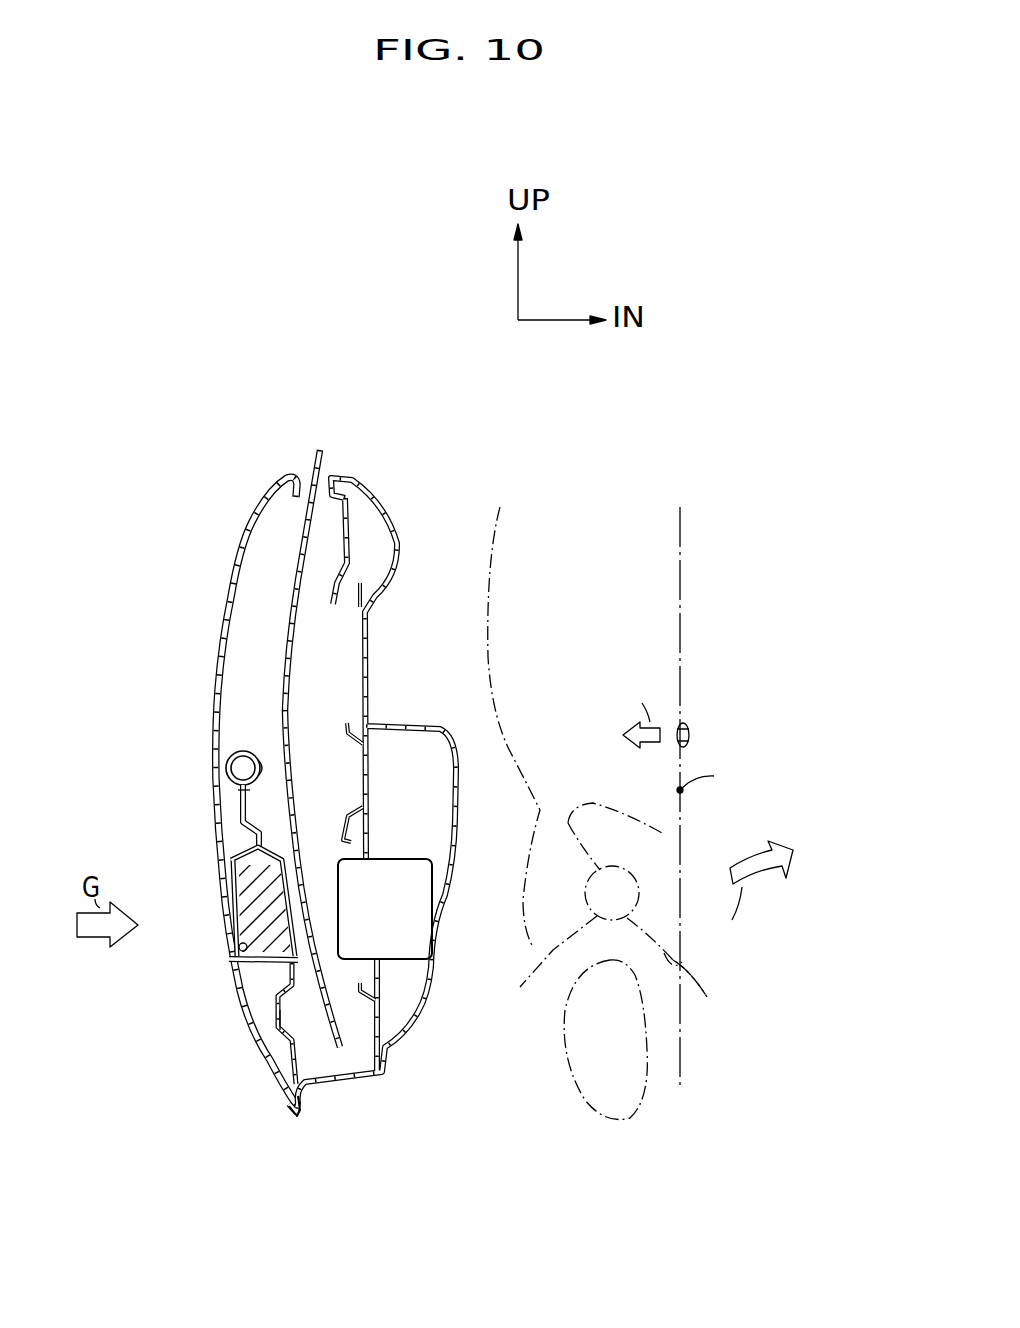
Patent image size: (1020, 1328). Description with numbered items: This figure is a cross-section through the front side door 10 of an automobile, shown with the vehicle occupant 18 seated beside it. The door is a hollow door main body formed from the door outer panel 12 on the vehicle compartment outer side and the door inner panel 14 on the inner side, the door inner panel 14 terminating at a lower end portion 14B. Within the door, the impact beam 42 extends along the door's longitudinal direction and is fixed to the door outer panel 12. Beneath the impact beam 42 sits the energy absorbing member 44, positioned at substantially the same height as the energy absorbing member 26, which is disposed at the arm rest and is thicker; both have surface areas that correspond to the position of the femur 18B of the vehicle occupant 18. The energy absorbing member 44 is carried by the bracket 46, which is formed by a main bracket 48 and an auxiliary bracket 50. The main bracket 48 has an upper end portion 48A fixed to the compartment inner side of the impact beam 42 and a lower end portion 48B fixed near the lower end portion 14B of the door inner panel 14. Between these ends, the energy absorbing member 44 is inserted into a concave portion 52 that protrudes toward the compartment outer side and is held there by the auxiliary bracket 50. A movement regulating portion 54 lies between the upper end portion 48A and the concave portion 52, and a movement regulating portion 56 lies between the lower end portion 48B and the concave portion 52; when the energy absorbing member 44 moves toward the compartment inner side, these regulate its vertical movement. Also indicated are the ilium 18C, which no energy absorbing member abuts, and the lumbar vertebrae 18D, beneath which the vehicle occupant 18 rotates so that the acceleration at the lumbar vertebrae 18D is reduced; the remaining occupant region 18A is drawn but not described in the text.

The front side door 10 is at (252, 442).
The door outer panel 12 is at (237, 537).
The door inner panel 14 is at (345, 563).
The lower end portion of door inner panel 14B is at (305, 1100).
The vehicle occupant 18 is at (490, 540).
The occupant thigh 18A is at (716, 990).
The femur 18B is at (568, 1000).
The ilium 18C is at (577, 803).
The lumbar vertebrae 18D is at (688, 722).
The energy absorbing member 26 is at (420, 927).
The impact beam 42 is at (240, 750).
The energy absorbing member 44 is at (238, 903).
The bracket 46 is at (148, 775).
The main bracket 48 is at (237, 815).
The upper end portion of main bracket 48A is at (287, 765).
The lower end portion of main bracket 48B is at (283, 1087).
The auxiliary bracket 50 is at (250, 845).
The concave portion 52 is at (240, 958).
The movement regulating portion 54 is at (248, 800).
The movement regulating portion 56 is at (290, 1022).